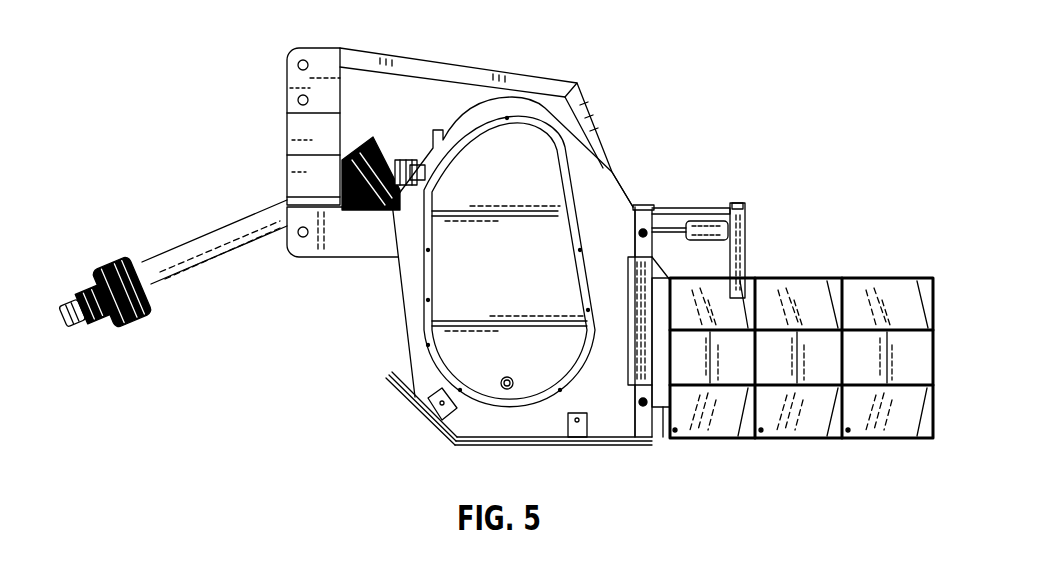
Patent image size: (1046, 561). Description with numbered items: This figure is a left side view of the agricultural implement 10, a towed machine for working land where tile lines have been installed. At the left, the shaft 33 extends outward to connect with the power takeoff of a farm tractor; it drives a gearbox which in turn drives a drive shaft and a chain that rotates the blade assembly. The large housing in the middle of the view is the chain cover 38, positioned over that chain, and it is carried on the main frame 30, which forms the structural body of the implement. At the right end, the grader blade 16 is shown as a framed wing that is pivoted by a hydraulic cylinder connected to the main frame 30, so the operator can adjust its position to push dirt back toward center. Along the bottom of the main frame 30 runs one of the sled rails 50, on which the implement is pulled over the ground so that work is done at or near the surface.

The agricultural implement 10 is at (780, 62).
The grader blade 16 is at (862, 278).
The main frame 30 is at (400, 306).
The shaft 33 is at (205, 232).
The chain cover 38 is at (522, 288).
The sled rails 50 is at (428, 407).